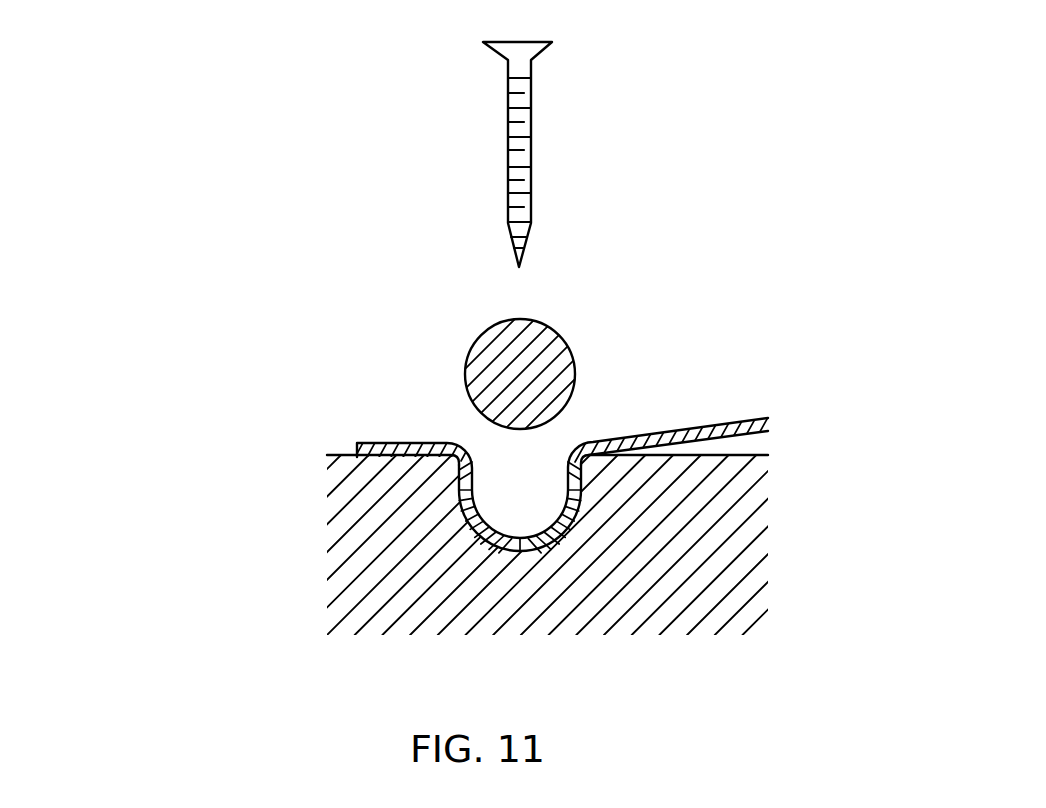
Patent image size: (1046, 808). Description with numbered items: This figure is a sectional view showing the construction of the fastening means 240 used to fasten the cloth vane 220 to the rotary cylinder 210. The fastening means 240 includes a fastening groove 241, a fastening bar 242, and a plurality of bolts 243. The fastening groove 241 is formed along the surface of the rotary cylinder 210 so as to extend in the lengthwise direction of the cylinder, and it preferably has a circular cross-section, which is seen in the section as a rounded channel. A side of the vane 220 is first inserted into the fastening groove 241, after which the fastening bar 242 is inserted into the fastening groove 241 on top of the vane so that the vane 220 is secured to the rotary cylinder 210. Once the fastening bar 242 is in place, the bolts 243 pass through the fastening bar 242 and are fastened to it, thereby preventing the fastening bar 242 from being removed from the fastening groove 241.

The rotary cylinder 210 is at (722, 538).
The vane 220 is at (710, 423).
The fastening means 240 is at (160, 130).
The fastening groove 241 is at (492, 507).
The fastening bar 242 is at (484, 350).
The bolt 243 is at (518, 125).